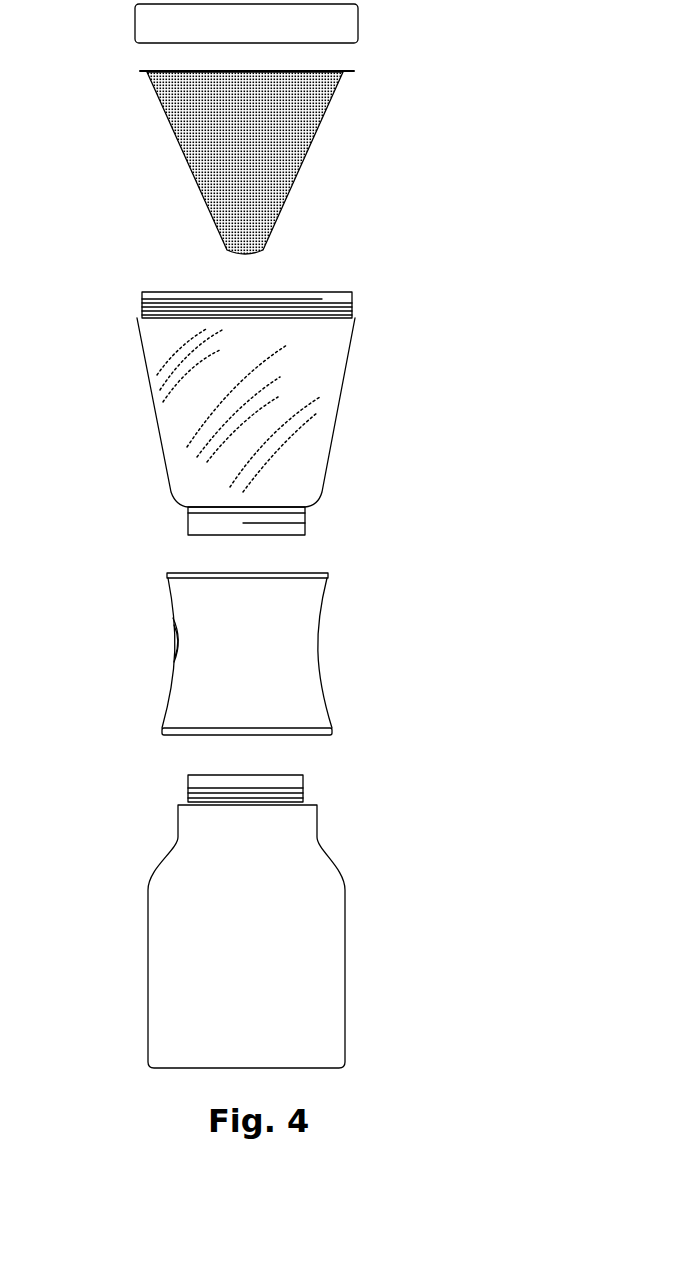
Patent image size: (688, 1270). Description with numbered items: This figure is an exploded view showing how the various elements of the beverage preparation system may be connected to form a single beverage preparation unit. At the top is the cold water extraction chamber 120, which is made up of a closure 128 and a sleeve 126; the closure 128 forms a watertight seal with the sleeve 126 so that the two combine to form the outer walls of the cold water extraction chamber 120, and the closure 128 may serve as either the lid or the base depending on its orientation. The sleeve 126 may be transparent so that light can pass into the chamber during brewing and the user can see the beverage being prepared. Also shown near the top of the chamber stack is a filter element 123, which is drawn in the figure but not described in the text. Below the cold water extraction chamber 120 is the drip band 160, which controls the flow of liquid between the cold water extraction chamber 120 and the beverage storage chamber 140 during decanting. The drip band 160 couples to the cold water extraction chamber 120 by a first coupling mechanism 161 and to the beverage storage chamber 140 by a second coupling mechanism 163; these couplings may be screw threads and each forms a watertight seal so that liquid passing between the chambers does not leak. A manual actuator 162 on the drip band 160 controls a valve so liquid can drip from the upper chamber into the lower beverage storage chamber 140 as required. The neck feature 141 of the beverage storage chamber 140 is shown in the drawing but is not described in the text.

The cold water extraction chamber 120 is at (514, 0).
The filter 123 is at (302, 132).
The sleeve 126 is at (327, 347).
The closure 128 is at (347, 27).
The beverage storage chamber 140 is at (295, 928).
The bottle neck threads 141 is at (293, 783).
The drip band 160 is at (295, 677).
The first coupling mechanism 161 is at (142, 493).
The manual actuator 162 is at (172, 640).
The second coupling mechanism 163 is at (142, 713).